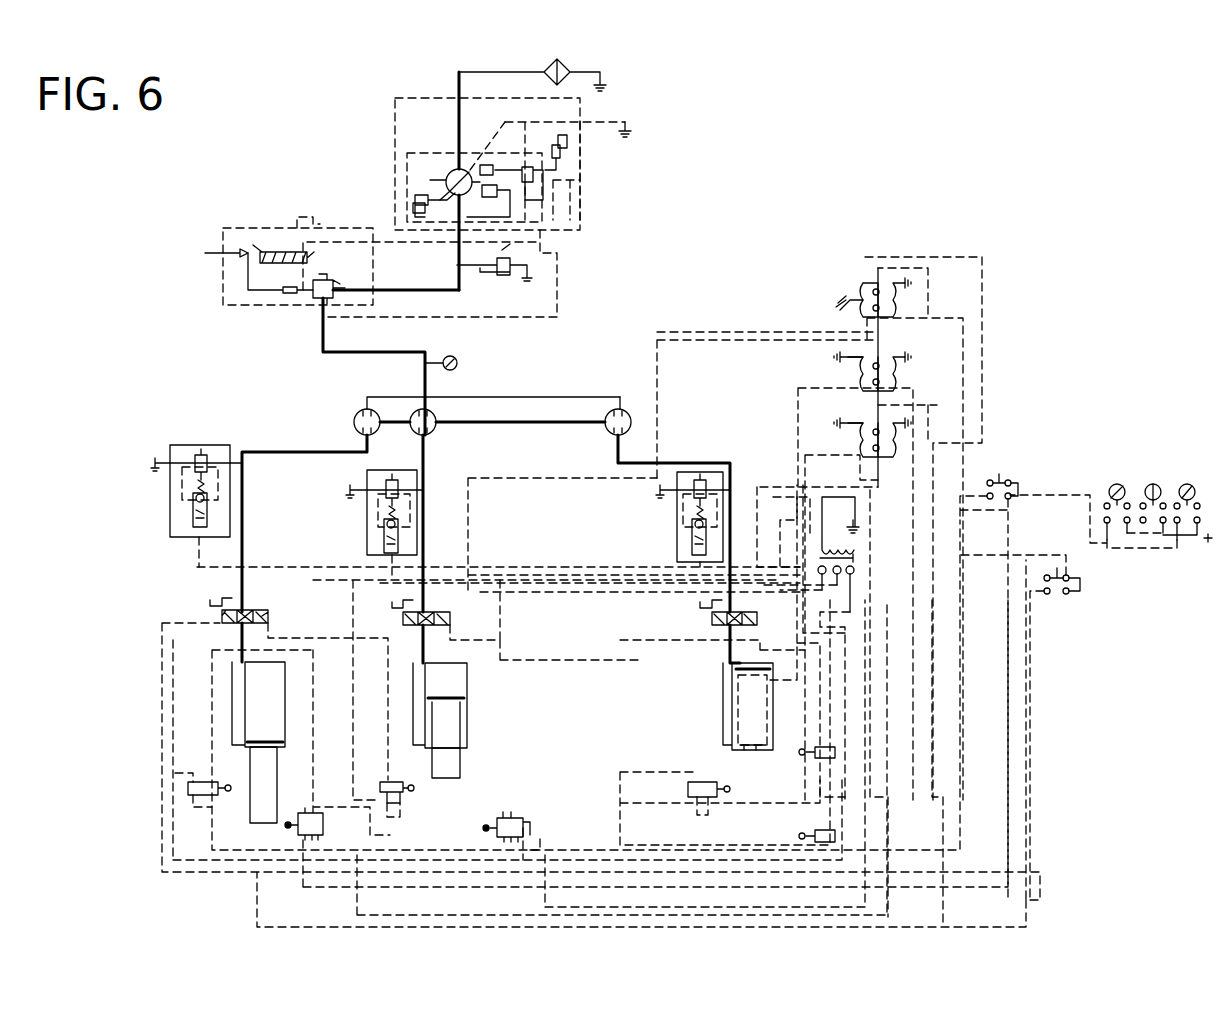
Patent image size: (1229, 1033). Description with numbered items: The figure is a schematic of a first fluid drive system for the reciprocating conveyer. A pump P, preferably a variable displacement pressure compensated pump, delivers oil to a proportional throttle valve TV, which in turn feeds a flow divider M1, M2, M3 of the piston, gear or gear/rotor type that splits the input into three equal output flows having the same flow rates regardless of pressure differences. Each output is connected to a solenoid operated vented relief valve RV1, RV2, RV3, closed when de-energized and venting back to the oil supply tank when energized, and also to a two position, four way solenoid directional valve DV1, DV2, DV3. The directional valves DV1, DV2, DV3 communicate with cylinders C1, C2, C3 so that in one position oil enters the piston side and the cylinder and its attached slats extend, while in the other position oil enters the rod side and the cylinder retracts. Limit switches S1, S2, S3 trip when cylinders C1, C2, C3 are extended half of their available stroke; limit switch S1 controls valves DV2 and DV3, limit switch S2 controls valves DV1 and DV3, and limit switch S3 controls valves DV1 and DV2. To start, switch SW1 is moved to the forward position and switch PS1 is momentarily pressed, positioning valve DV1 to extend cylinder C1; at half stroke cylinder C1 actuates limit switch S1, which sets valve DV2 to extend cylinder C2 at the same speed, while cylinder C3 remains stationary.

The pump P is at (580, 177).
The proportional throttle valve TV is at (256, 227).
The flow divider M1 is at (354, 422).
The flow divider M2 is at (433, 432).
The flow divider M3 is at (605, 437).
The relief valve RV1 is at (196, 443).
The relief valve RV2 is at (366, 547).
The relief valve RV3 is at (724, 472).
The solenoid directional valve DV1 is at (211, 621).
The solenoid directional valve DV2 is at (410, 623).
The solenoid directional valve DV3 is at (714, 623).
The cylinder C1 is at (288, 697).
The cylinder C2 is at (468, 697).
The cylinder C3 is at (722, 708).
The limit switch S1 is at (206, 782).
The limit switch S2 is at (380, 782).
The limit switch S3 is at (690, 782).
The switch SW1 is at (1175, 546).
The switch PS1 is at (1080, 583).